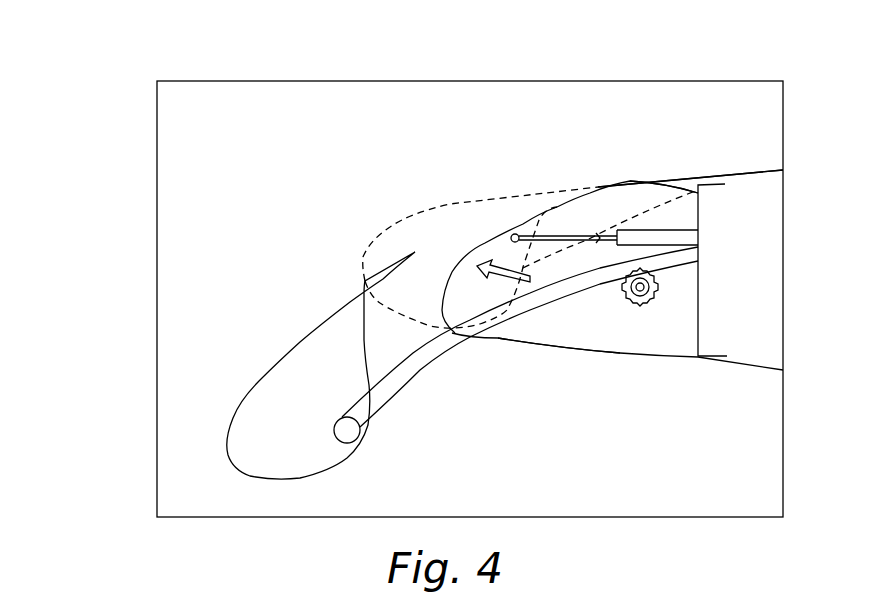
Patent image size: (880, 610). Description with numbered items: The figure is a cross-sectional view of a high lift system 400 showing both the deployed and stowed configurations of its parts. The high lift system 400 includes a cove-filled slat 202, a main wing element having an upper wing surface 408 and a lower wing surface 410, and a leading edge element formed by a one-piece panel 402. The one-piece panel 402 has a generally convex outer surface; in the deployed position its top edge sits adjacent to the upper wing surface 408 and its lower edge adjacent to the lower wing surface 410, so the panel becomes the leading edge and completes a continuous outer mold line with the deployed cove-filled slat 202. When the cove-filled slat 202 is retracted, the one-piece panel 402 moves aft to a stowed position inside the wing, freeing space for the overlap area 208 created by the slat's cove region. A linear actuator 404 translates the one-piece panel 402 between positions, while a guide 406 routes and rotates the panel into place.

The high lift system 400 is at (137, 127).
The cove-filled slat 202 is at (280, 370).
The one-piece panel 402 is at (642, 367).
The linear actuator 404 is at (662, 236).
The guide 406 is at (647, 185).
The upper wing surface 408 is at (713, 174).
The lower wing surface 410 is at (527, 347).
The overlap area 208 is at (497, 306).